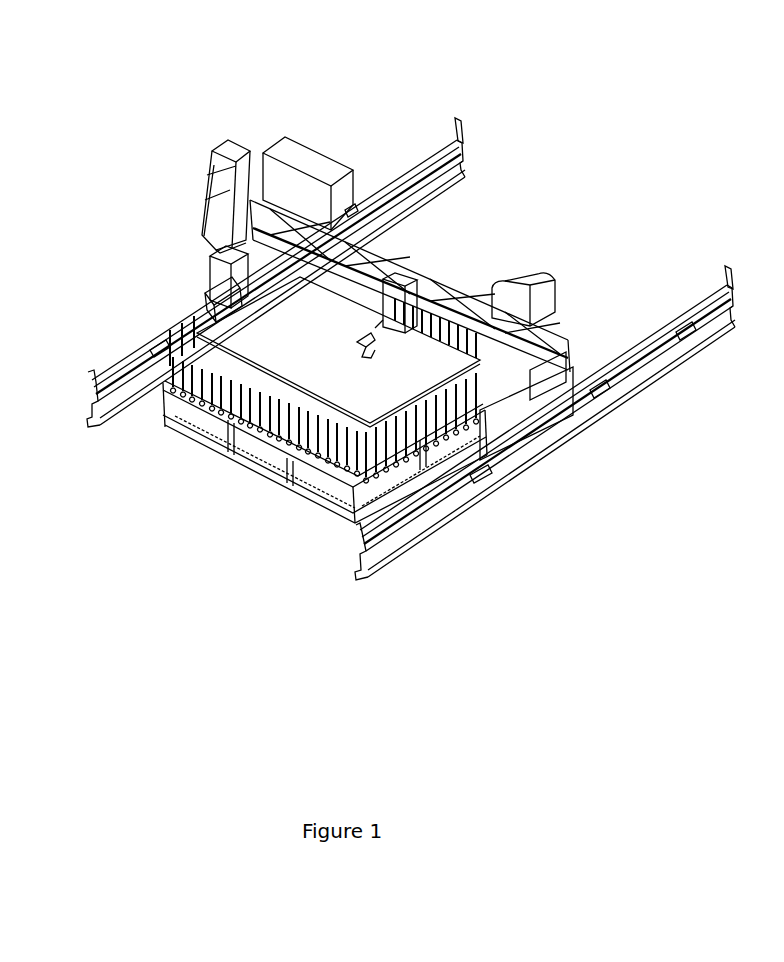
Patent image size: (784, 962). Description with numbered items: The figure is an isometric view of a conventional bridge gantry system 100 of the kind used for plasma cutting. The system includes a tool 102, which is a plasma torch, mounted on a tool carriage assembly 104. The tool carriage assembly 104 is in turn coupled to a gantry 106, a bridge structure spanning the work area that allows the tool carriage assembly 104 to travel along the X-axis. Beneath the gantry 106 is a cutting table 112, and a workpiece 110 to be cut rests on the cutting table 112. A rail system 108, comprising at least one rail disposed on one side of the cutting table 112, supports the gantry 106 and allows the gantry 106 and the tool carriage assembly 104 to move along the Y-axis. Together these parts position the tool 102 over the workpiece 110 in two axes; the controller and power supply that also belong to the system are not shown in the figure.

The bridge gantry system 100 is at (653, 86).
The tool 102 is at (335, 375).
The tool carriage assembly 104 is at (380, 322).
The gantry 106 is at (333, 271).
The rail system 108 is at (597, 421).
The workpiece 110 is at (402, 402).
The cutting table 112 is at (281, 486).